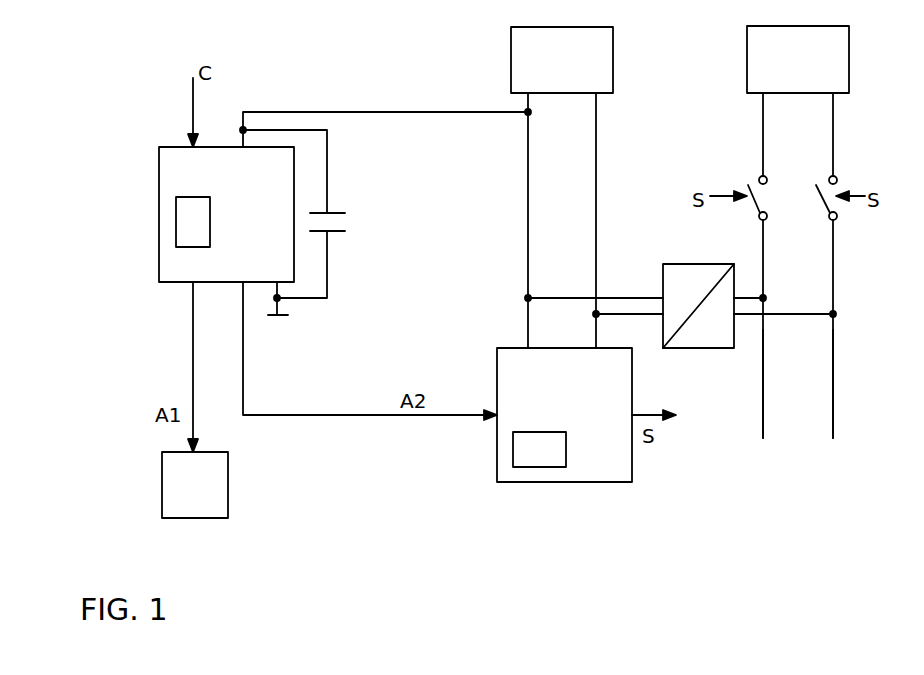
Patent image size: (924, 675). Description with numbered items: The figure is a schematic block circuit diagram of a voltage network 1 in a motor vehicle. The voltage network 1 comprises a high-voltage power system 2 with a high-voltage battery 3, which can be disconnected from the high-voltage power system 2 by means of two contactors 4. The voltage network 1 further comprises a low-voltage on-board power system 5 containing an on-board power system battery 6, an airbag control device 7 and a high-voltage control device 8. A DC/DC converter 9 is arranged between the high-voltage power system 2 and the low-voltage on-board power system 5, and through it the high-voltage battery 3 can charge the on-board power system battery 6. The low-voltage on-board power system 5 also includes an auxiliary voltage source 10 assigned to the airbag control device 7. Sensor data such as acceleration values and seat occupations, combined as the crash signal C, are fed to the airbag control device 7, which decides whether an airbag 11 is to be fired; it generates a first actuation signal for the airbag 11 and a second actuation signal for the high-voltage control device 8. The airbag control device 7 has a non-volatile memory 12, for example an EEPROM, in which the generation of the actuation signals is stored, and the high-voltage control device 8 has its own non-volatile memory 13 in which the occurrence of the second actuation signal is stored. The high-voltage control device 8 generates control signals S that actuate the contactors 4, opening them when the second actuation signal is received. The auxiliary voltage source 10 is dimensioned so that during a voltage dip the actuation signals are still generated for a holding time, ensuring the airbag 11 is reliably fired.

The voltage network 1 is at (642, 532).
The high-voltage power system 2 is at (862, 260).
The high-voltage battery 3 is at (841, 58).
The contactors 4 is at (750, 188).
The low-voltage on-board power system 5 is at (417, 84).
The on-board power system battery 6 is at (522, 60).
The airbag control device 7 is at (170, 166).
The high-voltage control device 8 is at (600, 472).
The DC/DC converter 9 is at (685, 272).
The auxiliary voltage source 10 is at (345, 213).
The airbag 11 is at (172, 481).
The non-volatile memory 12 is at (188, 217).
The non-volatile memory 13 is at (535, 458).